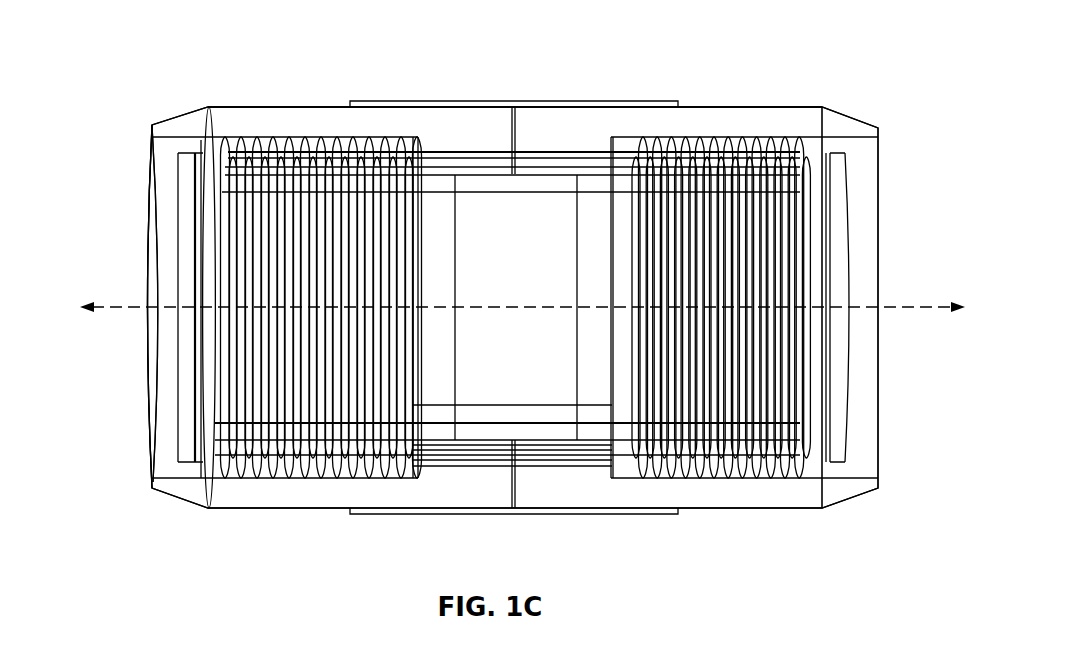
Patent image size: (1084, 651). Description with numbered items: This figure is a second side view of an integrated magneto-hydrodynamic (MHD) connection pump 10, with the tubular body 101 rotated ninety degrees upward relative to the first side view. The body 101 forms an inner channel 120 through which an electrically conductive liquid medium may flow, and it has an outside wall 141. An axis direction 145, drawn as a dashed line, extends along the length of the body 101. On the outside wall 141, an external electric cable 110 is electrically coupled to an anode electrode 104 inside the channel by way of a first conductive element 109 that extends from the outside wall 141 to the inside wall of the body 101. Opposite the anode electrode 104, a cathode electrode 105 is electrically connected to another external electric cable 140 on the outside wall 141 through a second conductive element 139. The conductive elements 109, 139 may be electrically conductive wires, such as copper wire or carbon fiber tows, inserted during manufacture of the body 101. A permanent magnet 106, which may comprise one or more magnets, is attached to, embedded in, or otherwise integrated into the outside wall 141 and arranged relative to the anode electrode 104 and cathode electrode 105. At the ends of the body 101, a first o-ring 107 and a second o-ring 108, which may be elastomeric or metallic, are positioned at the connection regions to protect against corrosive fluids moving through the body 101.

The integrated magneto-hydrodynamic (MHD) connection pump 10 is at (148, 52).
The body 101 is at (227, 497).
The anode electrode 104 is at (455, 152).
The cathode electrode 105 is at (310, 437).
The permanent magnet 106 is at (576, 368).
The first o-ring 107 is at (195, 154).
The second o-ring 108 is at (840, 153).
The first conductive element 109 is at (518, 142).
The external electric cable 110 is at (486, 101).
The inner channel 120 is at (128, 222).
The second conductive element 139 is at (517, 468).
The external electric cable 140 is at (383, 513).
The outside wall 141 is at (708, 110).
The axis direction 145 is at (898, 300).